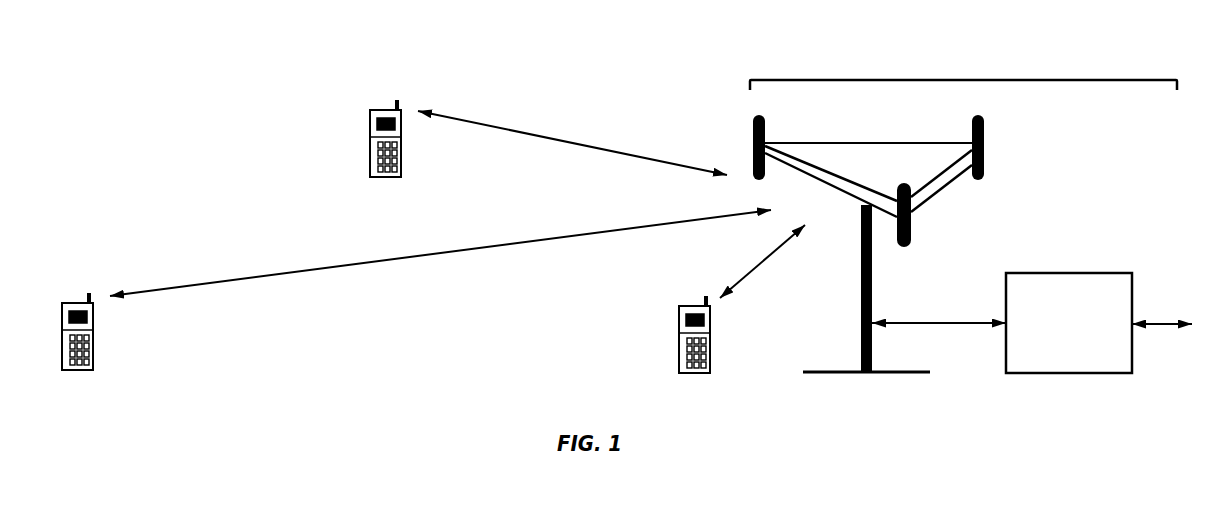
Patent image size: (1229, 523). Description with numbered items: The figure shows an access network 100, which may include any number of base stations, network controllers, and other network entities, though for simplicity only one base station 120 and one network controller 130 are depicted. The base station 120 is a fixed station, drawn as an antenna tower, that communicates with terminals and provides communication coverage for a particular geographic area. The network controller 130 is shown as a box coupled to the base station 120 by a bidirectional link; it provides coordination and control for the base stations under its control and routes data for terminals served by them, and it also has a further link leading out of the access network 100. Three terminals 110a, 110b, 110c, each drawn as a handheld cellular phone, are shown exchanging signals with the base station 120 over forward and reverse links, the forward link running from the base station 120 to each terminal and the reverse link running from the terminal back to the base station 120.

The access network 100 is at (971, 227).
The terminal 110a is at (693, 304).
The terminal 110b is at (383, 109).
The terminal 110c is at (75, 302).
The base station 120 is at (862, 142).
The network controller 130 is at (1063, 272).